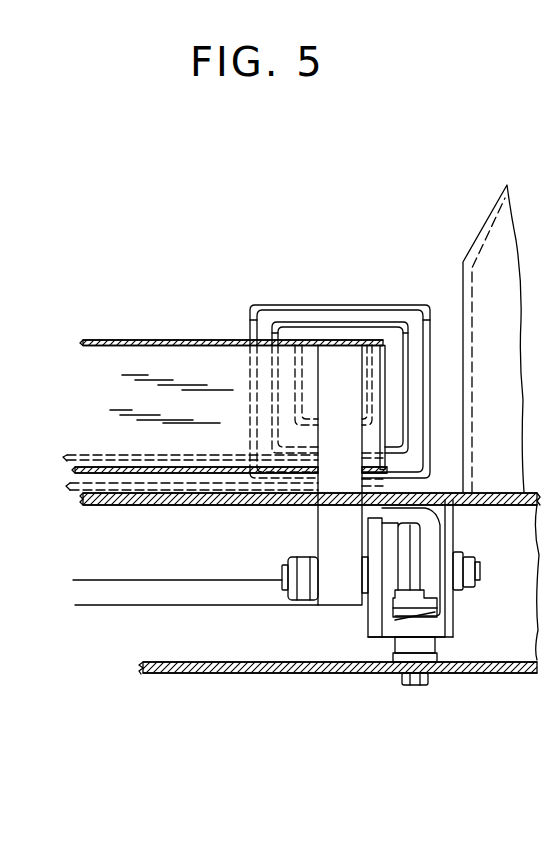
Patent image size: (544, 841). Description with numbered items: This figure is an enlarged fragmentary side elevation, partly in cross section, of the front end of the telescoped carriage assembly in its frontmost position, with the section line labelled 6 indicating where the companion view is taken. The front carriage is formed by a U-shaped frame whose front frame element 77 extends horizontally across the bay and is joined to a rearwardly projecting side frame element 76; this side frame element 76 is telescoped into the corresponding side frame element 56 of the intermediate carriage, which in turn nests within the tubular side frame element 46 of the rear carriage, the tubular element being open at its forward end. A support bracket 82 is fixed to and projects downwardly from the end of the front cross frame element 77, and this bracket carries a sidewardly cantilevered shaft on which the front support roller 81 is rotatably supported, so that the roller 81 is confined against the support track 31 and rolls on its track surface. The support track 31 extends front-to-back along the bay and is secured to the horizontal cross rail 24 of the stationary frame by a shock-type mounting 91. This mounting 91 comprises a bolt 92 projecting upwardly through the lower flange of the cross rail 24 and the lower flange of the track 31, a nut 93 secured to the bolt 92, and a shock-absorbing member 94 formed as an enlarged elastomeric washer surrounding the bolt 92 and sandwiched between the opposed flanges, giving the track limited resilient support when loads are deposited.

The cross rail 24 is at (236, 675).
The support track 31 is at (448, 628).
The side frame element 46 is at (410, 304).
The side frame element 56 is at (377, 322).
The side frame element 76 is at (293, 397).
The front frame element 77 is at (110, 338).
The front support roller 81 is at (392, 543).
The support bracket 82 is at (318, 532).
The shock-type mounting 91 is at (383, 645).
The bolt 92 is at (414, 686).
The nut 93 is at (410, 607).
The shock-absorbing member 94 is at (433, 650).
The section line 6- 6 is at (437, 487).